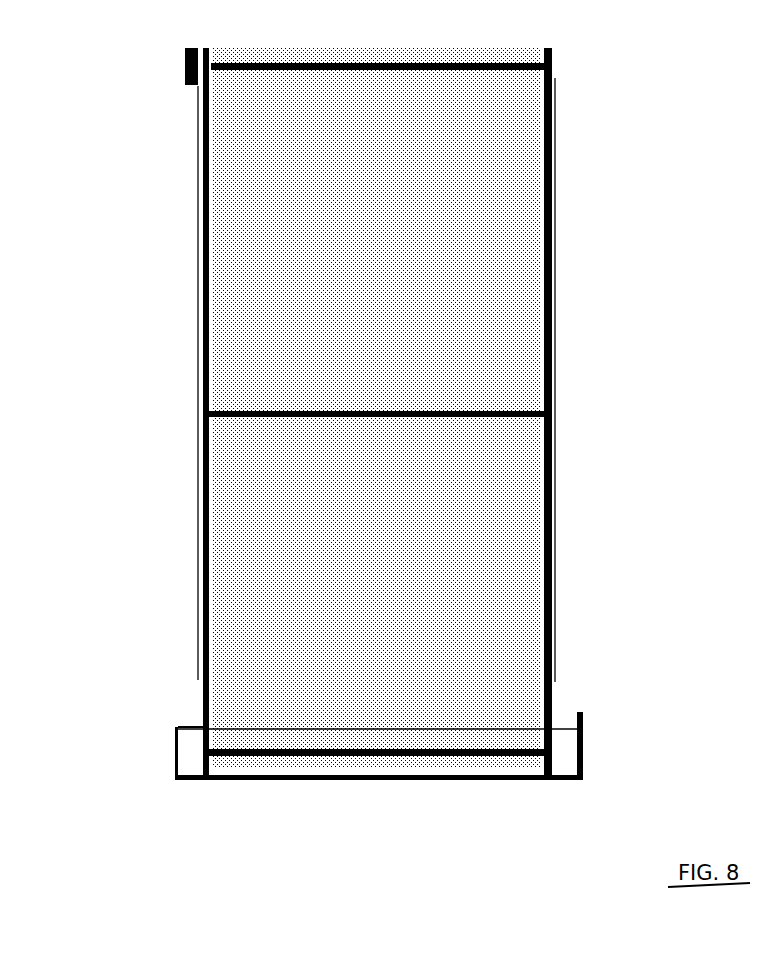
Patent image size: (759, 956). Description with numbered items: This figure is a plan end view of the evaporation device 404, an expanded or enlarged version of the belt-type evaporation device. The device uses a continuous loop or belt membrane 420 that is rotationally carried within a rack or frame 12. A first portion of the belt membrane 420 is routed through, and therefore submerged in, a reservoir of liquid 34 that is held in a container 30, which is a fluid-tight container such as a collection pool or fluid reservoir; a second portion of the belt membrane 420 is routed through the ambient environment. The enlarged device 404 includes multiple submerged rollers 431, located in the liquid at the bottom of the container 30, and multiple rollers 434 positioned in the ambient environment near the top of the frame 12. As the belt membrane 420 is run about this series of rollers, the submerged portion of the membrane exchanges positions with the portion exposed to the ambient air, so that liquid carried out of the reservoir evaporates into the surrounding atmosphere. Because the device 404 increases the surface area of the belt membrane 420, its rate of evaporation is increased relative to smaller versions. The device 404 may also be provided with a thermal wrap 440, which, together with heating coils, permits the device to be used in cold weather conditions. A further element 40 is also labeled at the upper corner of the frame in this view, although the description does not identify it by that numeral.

The frame 12 is at (548, 700).
The container 30 is at (171, 764).
The reservoir of liquid 34 is at (180, 724).
The clip 40 is at (184, 63).
The evaporation device 404 is at (666, 160).
The belt membrane 420 is at (216, 198).
The submerged rollers 431 is at (545, 778).
The rollers 434 is at (540, 48).
The thermal wrap 440 is at (197, 452).